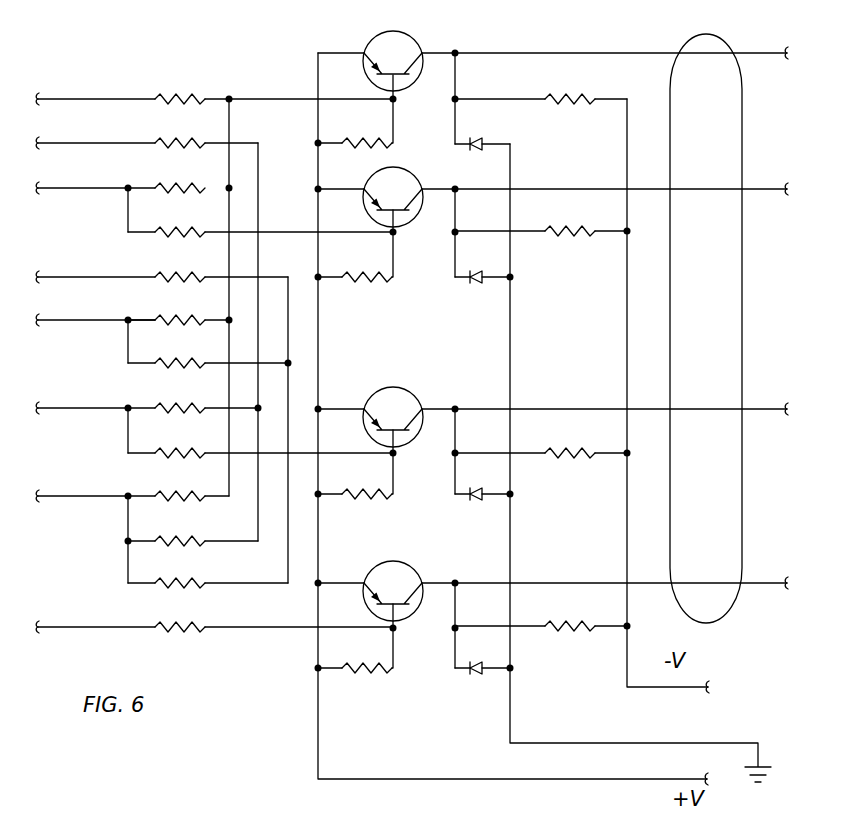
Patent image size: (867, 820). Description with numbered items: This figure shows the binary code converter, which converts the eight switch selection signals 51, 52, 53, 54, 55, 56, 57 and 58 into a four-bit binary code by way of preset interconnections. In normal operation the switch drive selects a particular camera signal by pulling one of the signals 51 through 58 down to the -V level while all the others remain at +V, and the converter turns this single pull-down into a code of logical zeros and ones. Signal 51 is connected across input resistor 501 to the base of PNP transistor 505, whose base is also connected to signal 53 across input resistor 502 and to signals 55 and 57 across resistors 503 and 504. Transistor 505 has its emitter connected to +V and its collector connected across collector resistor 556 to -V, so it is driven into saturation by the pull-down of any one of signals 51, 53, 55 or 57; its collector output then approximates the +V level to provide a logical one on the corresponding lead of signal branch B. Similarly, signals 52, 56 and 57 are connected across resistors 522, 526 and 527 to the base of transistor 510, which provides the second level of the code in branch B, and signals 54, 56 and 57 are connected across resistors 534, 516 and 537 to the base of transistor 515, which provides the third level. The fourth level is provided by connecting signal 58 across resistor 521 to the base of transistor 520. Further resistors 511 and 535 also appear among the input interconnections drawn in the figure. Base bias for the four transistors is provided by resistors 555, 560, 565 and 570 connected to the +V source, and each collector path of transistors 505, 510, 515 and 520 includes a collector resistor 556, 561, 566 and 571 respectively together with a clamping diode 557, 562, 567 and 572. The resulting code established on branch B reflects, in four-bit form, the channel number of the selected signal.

The switch selection signal S1 51 is at (214, 84).
The switch selection signal S2 52 is at (147, 131).
The switch selection signal S3 53 is at (95, 174).
The switch selection signal S4 54 is at (162, 263).
The switch selection signal S5 55 is at (95, 307).
The switch selection signal S6 56 is at (147, 395).
The switch selection signal S7 57 is at (132, 480).
The switch selection signal S8 58 is at (214, 611).
The input resistor 501 is at (192, 83).
The input resistor 502 is at (180, 173).
The resistor 503 is at (178, 306).
The resistor 504 is at (183, 479).
The resistor 511 is at (260, 218).
The resistor 516 is at (260, 438).
The resistor 521 is at (200, 612).
The resistor 522 is at (184, 131).
The resistor 526 is at (184, 393).
The resistor 527 is at (193, 527).
The resistor 534 is at (184, 263).
The resistor 535 is at (208, 347).
The resistor 537 is at (208, 569).
The PNP transistor 505 is at (370, 50).
The transistor 510 is at (418, 160).
The transistor 515 is at (406, 386).
The transistor 520 is at (430, 552).
The base bias resistor 555 is at (355, 123).
The base bias resistor 560 is at (365, 279).
The base bias resistor 565 is at (362, 496).
The base bias resistor 570 is at (352, 670).
The collector resistor 556 is at (541, 83).
The collector resistor 561 is at (541, 217).
The collector resistor 566 is at (541, 438).
The collector resistor 571 is at (573, 628).
The clamping diode 557 is at (484, 140).
The clamping diode 562 is at (502, 274).
The clamping diode 567 is at (494, 494).
The clamping diode 572 is at (480, 674).
The signal branch B is at (742, 297).